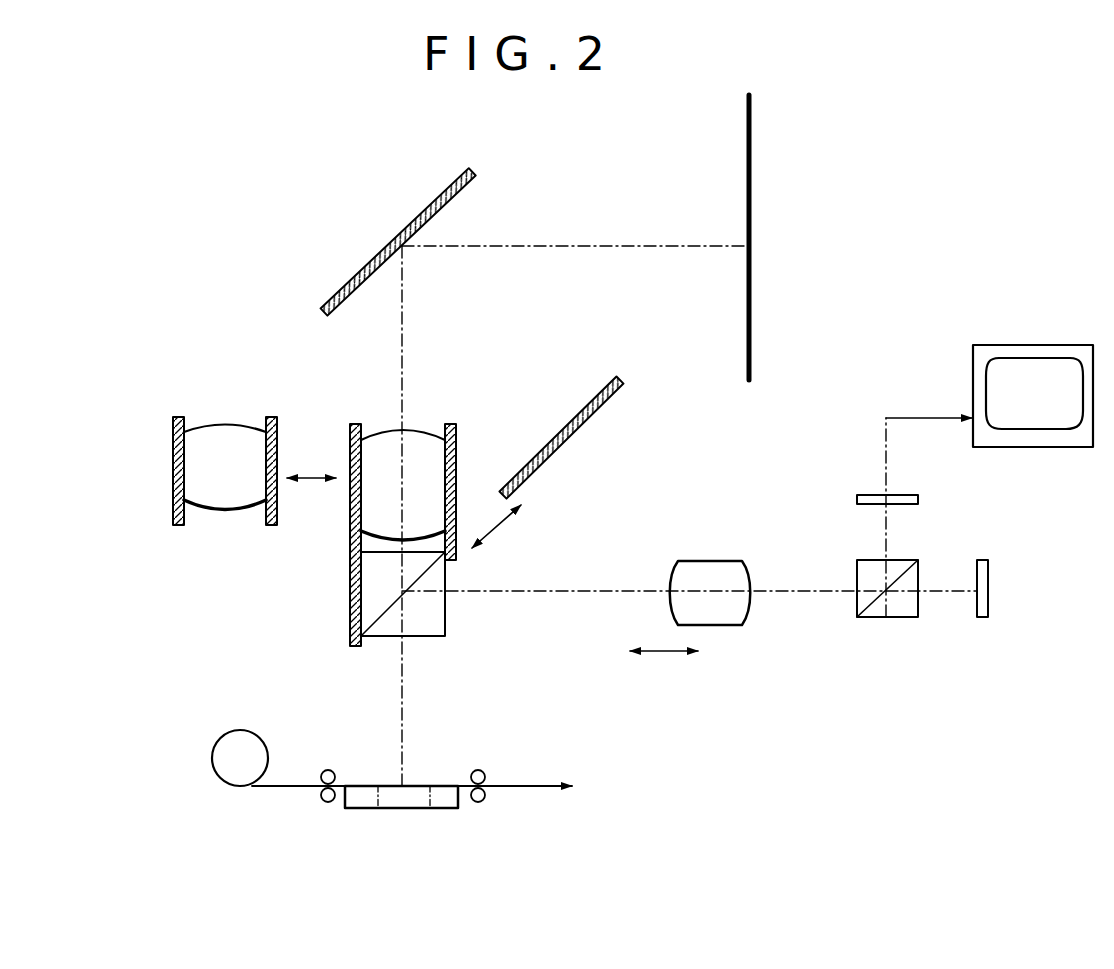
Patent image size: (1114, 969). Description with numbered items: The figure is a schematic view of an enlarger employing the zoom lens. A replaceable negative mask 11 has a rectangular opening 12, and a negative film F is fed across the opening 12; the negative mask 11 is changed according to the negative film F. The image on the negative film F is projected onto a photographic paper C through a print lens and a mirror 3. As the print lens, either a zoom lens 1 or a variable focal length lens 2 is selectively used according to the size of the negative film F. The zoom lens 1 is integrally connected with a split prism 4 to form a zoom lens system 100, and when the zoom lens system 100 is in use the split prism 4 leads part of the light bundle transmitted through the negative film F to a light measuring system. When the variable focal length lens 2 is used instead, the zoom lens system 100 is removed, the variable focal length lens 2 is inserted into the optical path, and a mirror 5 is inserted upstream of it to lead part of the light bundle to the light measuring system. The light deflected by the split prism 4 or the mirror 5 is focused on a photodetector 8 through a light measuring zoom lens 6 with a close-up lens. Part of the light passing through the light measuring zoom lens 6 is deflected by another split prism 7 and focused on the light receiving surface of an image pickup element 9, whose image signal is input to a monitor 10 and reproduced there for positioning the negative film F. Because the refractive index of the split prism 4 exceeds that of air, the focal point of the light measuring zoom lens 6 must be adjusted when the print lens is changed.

The zoom lens 1 is at (359, 500).
The variable focal length lens 2 is at (226, 428).
The mirror 3 is at (442, 196).
The split prism 4 is at (383, 630).
The mirror 5 is at (586, 407).
The light measuring zoom lens 6 is at (700, 565).
The split prism 7 is at (888, 620).
The photodetector 8 is at (986, 560).
The image pickup element 9 is at (857, 498).
The monitor 10 is at (1040, 447).
The negative mask 11 is at (445, 790).
The rectangular opening 12 is at (404, 787).
The zoom lens system 100 is at (350, 537).
The photographic paper C is at (752, 168).
The negative film F is at (515, 785).